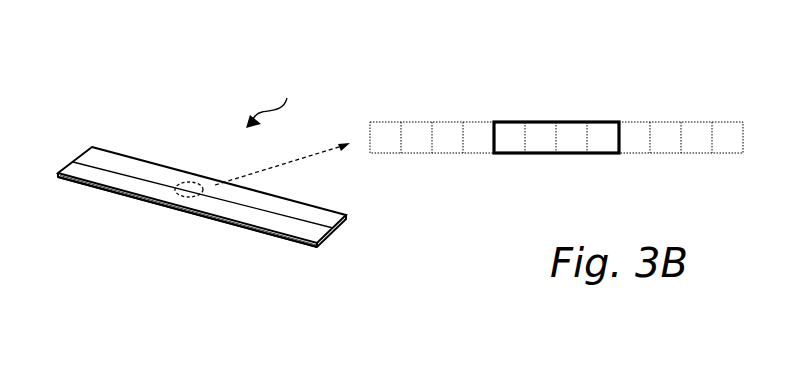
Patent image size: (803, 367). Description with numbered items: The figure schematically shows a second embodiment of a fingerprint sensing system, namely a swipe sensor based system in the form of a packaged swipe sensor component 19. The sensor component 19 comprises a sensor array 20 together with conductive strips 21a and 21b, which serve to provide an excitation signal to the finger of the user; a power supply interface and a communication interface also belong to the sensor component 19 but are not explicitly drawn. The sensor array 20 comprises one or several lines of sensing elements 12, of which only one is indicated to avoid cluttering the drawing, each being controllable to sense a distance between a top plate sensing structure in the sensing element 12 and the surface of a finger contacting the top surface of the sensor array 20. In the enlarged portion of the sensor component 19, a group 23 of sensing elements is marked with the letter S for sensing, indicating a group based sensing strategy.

The sensing element 12 is at (438, 153).
The packaged swipe sensor component 19 is at (275, 100).
The sensor array 20 is at (107, 167).
The conductive strip 21a is at (150, 163).
The conductive strip 21b is at (113, 188).
The group of sensing elements 23 is at (535, 163).